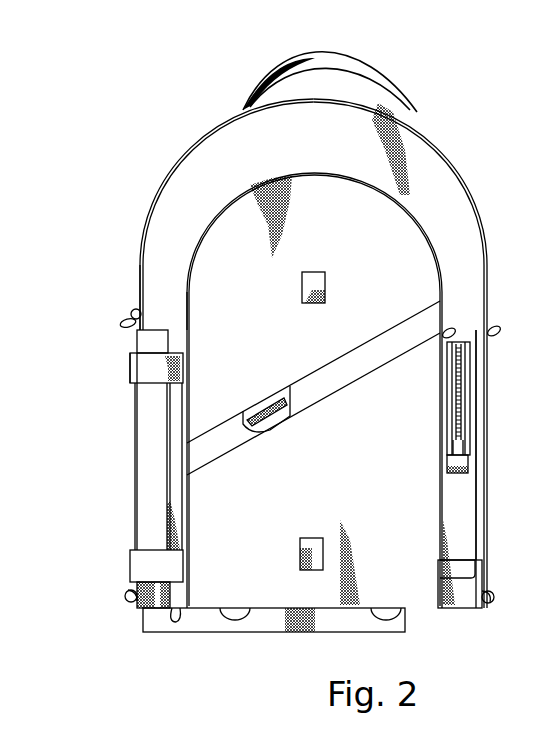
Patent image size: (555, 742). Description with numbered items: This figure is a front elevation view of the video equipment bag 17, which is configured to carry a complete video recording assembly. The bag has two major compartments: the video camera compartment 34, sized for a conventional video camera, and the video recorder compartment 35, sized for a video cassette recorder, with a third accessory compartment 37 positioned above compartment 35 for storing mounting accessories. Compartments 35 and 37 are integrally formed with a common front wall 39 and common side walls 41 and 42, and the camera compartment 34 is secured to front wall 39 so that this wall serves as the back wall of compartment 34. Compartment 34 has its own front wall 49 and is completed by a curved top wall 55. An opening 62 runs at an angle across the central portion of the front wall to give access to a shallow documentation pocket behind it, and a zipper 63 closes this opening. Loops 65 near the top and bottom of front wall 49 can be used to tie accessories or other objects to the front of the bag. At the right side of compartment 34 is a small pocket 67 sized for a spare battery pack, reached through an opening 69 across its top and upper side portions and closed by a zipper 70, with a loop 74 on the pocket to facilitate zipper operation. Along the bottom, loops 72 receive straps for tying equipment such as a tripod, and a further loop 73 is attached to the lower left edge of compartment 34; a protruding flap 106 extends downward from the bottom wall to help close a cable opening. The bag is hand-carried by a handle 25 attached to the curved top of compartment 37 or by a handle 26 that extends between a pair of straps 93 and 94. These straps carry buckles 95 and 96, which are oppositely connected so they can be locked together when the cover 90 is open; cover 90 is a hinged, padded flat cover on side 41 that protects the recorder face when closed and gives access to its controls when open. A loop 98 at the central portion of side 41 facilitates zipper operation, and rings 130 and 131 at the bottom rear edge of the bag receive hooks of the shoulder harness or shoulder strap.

The video equipment bag 17 is at (138, 186).
The handle 25 is at (358, 68).
The handle 26 is at (135, 449).
The video camera compartment 34 is at (334, 472).
The video recorder compartment 35 is at (478, 514).
The accessory compartment 37 is at (433, 158).
The common front wall 39 is at (197, 158).
The side wall 41 is at (139, 275).
The side wall 42 is at (486, 260).
The front wall 49 is at (200, 262).
The curved top wall 55 is at (290, 173).
The opening 62 is at (300, 380).
The zipper 63 is at (258, 412).
The loops 65 is at (325, 290).
The small pocket 67 is at (462, 553).
The opening 69 is at (468, 372).
The zipper 70 is at (462, 398).
The loops 72 is at (238, 624).
The loop 73 is at (175, 622).
The loop 74 is at (465, 462).
The cover 90 is at (146, 417).
The strap 93 is at (145, 367).
The strap 94 is at (150, 558).
The buckle 95 is at (130, 372).
The buckle 96 is at (130, 566).
The loop 98 is at (120, 322).
The protruding flap 106 is at (328, 625).
The ring 130 is at (490, 605).
The ring 131 is at (124, 594).